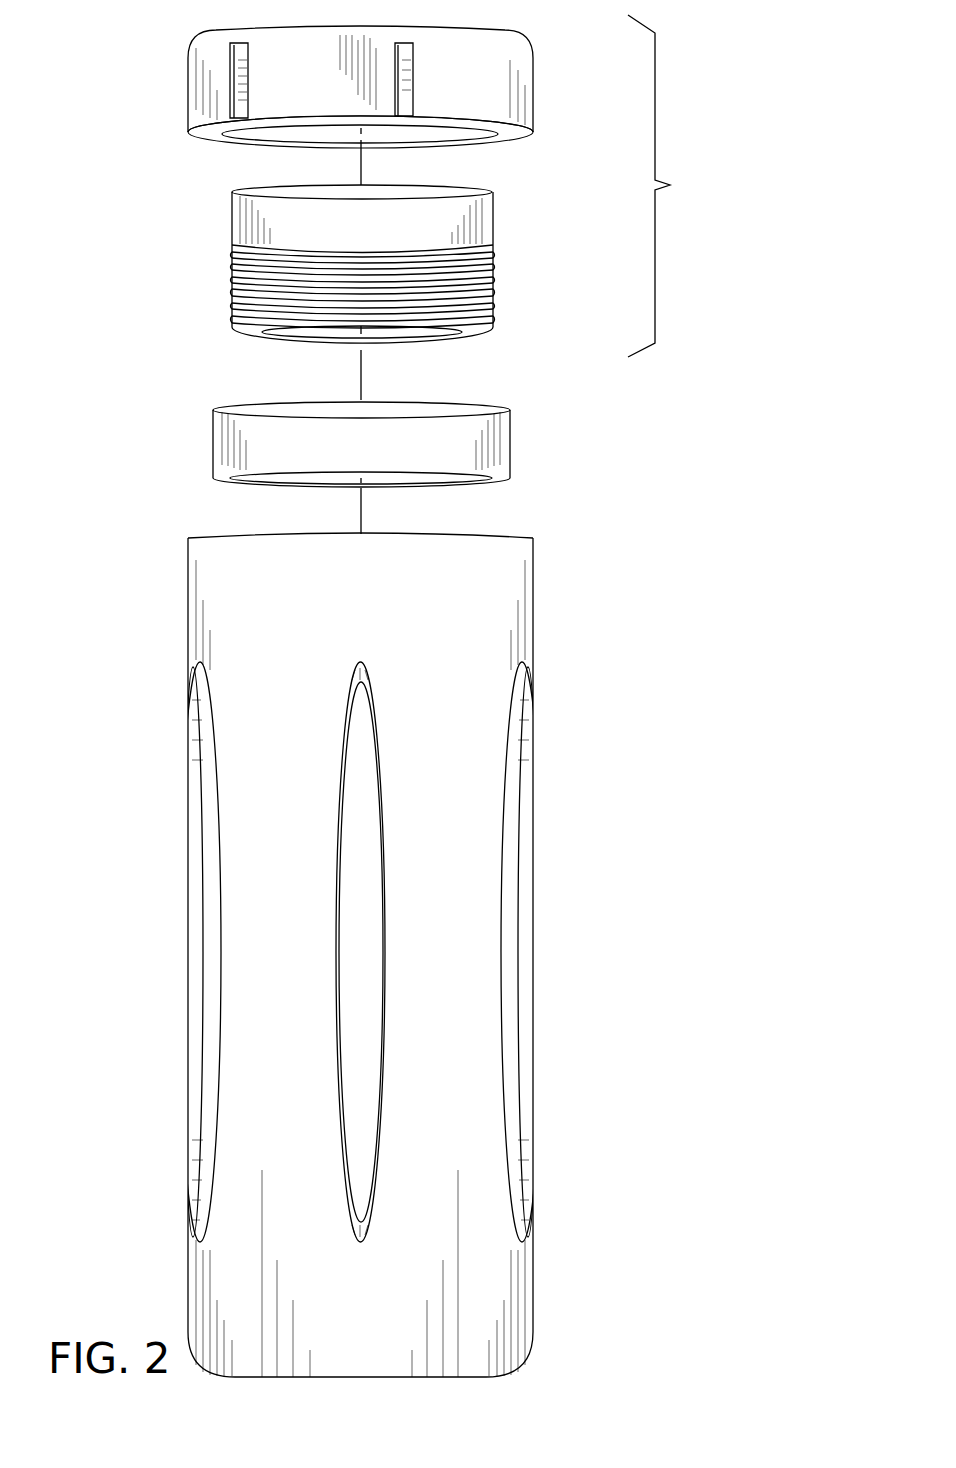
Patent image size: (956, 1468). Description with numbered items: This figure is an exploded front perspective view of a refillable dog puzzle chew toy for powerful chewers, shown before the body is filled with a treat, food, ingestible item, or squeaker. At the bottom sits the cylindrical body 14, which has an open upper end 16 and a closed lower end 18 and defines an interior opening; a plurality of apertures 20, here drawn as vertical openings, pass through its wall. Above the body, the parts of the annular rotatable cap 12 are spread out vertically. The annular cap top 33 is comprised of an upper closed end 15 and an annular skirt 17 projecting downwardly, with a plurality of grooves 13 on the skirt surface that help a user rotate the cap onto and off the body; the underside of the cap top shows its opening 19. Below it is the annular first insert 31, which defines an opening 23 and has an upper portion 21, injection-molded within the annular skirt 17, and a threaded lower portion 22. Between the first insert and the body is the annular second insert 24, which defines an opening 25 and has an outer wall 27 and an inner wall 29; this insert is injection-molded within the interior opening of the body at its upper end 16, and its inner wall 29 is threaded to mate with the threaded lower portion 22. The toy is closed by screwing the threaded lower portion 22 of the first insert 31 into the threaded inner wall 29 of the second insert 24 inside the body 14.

The annular rotatable cap 12 is at (666, 186).
The grooves 13 is at (242, 95).
The cylindrical body 14 is at (205, 1278).
The upper closed end 15 is at (262, 28).
The open upper end 16 is at (190, 540).
The annular skirt 17 is at (535, 119).
The closed lower end 18 is at (515, 1361).
The cap opening 19 is at (448, 136).
The apertures 20 is at (360, 930).
The upper portion 21 is at (497, 232).
The threaded lower portion 22 is at (497, 290).
The opening 23 is at (410, 333).
The annular second insert 24 is at (485, 442).
The opening 25 is at (410, 483).
The outer wall 27 is at (214, 428).
The inner wall 29 is at (215, 478).
The annular first insert 31 is at (258, 268).
The annular cap top 33 is at (510, 85).